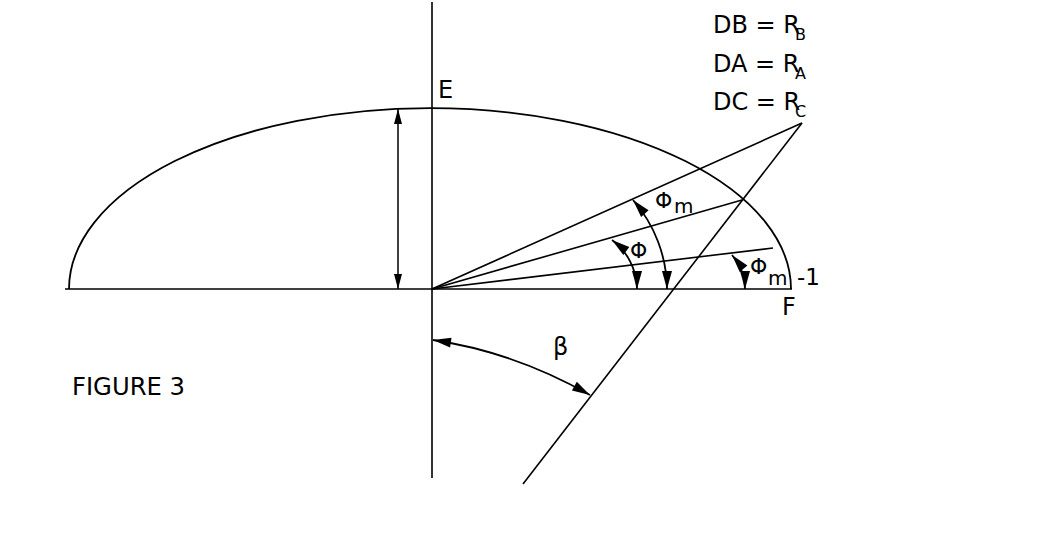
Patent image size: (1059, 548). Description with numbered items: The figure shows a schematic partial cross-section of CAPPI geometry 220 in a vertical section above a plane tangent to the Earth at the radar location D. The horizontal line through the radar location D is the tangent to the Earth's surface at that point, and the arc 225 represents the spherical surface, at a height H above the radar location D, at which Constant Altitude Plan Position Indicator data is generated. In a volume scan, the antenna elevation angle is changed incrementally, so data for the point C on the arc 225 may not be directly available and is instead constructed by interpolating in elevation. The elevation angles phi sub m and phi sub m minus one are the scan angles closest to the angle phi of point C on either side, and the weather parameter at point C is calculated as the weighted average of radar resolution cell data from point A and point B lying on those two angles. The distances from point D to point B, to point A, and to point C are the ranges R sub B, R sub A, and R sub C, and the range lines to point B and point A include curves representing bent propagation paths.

The CAPPI geometry 220 is at (416, 157).
The arc 225 is at (312, 115).
The height H is at (384, 199).
The radar location D is at (420, 240).
The point A is at (602, 259).
The point B is at (628, 203).
The point C is at (600, 237).